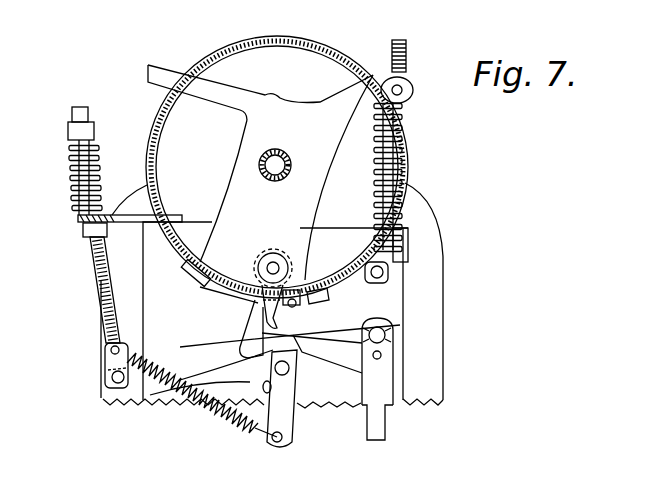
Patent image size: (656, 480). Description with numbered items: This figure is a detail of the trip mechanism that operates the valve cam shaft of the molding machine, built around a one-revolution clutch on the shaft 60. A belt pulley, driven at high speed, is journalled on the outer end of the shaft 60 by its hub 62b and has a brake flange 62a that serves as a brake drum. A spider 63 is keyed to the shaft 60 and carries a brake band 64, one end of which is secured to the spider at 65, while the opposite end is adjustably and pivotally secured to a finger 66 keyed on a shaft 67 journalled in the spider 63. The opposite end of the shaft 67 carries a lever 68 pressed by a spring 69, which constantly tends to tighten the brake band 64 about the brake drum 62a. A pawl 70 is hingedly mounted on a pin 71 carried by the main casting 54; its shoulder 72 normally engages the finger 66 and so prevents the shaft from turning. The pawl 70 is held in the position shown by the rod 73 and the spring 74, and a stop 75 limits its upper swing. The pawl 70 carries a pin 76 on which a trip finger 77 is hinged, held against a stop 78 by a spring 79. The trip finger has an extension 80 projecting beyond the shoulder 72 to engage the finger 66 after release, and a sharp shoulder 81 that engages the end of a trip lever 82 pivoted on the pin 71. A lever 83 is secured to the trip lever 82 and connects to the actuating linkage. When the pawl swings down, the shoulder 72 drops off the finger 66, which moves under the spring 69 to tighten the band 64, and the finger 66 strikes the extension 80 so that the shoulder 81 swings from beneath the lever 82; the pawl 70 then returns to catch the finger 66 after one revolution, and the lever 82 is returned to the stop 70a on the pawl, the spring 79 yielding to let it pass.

The main casting 54 is at (441, 272).
The shaft 60 is at (259, 168).
The brake flange 62a is at (170, 110).
The hub 62b is at (260, 153).
The spider 63 is at (313, 190).
The brake band 64 is at (217, 50).
The securing point 65 is at (200, 280).
The finger 66 is at (292, 310).
The shaft 67 is at (280, 262).
The lever 68 is at (388, 250).
The spring 69 is at (405, 158).
The pawl 70 is at (207, 360).
The stop 70a is at (400, 325).
The pin 71 is at (387, 340).
The shoulder 72 is at (242, 325).
The rod 73 is at (97, 262).
The spring 74 is at (77, 172).
The stop 75 is at (83, 230).
The pin 76 is at (237, 393).
The trip finger 77 is at (292, 432).
The stop 78 is at (266, 393).
The spring 79 is at (147, 387).
The extension 80 is at (253, 307).
The sharp shoulder 81 is at (212, 388).
The trip lever 82 is at (318, 380).
The lever 83 is at (386, 423).